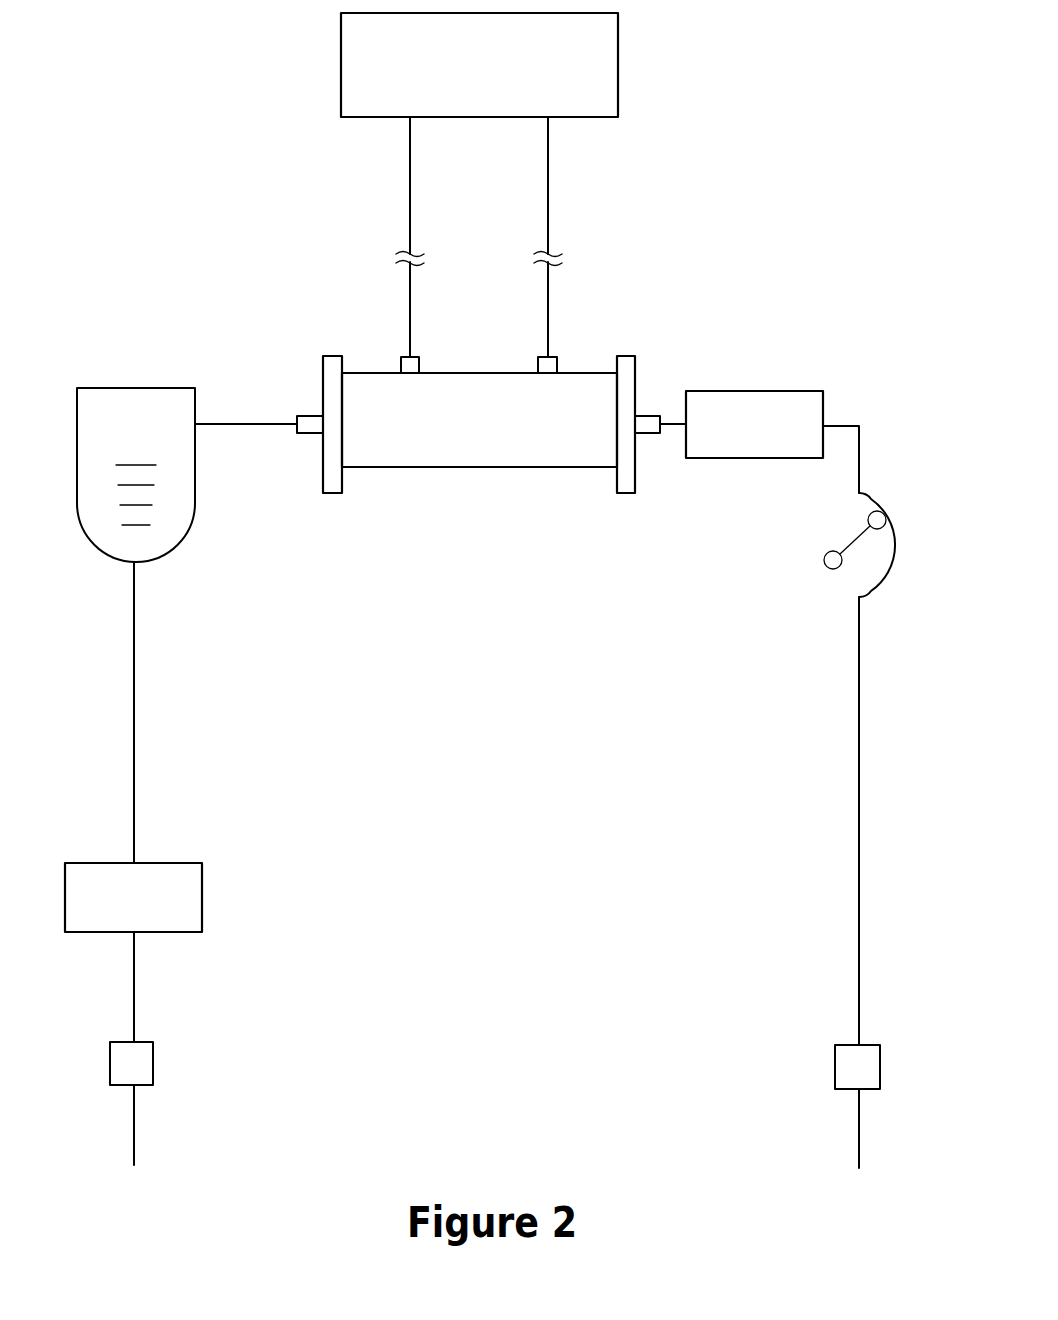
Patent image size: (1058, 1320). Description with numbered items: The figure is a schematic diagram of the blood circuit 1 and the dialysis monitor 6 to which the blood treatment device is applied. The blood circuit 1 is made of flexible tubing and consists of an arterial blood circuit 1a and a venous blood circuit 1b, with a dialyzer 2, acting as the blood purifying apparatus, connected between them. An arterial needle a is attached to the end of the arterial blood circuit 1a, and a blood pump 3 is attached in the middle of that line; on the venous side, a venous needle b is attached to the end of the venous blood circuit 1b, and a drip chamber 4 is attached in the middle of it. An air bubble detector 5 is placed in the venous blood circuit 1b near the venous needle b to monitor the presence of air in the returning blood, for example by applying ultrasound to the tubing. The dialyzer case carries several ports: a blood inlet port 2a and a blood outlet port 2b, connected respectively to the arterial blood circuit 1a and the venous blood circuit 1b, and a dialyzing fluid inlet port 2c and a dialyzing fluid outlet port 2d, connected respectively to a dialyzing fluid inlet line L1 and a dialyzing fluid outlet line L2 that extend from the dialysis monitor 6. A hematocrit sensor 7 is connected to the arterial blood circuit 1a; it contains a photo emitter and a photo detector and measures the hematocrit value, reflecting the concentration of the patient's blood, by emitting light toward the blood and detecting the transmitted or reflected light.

The blood circuit 1 is at (866, 410).
The arterial blood circuit 1a is at (859, 457).
The venous blood circuit 1b is at (134, 670).
The dialyzer 2 is at (408, 468).
The blood inlet port 2a is at (655, 415).
The blood outlet port 2b is at (305, 415).
The dialyzing fluid inlet port 2c is at (420, 365).
The dialyzing fluid outlet port 2d is at (558, 365).
The blood pump 3 is at (909, 540).
The drip chamber 4 is at (195, 478).
The air bubble detector 5 is at (202, 878).
The dialysis monitor 6 is at (619, 58).
The hematocrit sensor 7 is at (734, 458).
The dialyzing fluid inlet line L1 is at (408, 192).
The dialyzing fluid outlet line L2 is at (550, 187).
The arterial needle a is at (860, 1127).
The venous needle b is at (134, 1117).